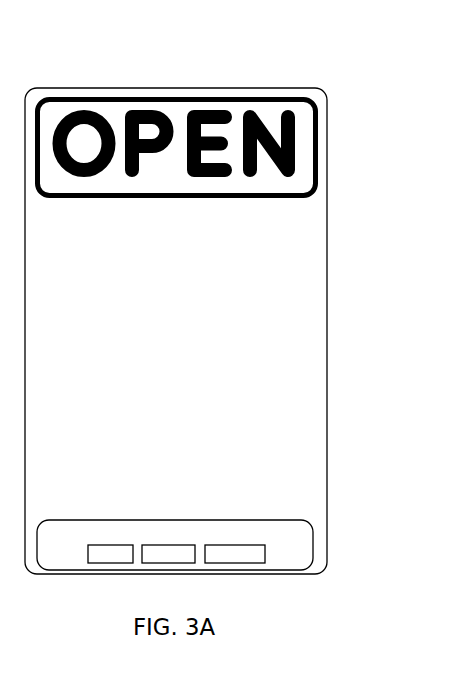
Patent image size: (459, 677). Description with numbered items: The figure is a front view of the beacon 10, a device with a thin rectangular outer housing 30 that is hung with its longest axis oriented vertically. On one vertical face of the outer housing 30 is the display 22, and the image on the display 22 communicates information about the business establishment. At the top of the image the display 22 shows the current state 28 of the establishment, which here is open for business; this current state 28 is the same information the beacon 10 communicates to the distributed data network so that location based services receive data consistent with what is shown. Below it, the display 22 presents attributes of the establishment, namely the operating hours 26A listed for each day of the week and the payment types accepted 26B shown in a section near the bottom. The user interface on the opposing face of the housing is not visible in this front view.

The beacon 10 is at (338, 70).
The outer housing 30 is at (175, 88).
The current state 28 is at (300, 265).
The display 22 is at (238, 412).
The operating hours 26A is at (260, 409).
The payment types accepted 26B is at (298, 548).